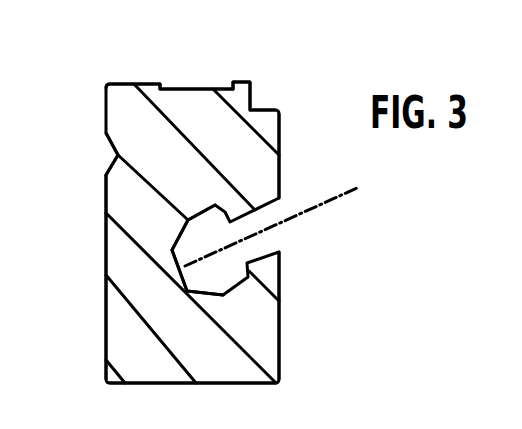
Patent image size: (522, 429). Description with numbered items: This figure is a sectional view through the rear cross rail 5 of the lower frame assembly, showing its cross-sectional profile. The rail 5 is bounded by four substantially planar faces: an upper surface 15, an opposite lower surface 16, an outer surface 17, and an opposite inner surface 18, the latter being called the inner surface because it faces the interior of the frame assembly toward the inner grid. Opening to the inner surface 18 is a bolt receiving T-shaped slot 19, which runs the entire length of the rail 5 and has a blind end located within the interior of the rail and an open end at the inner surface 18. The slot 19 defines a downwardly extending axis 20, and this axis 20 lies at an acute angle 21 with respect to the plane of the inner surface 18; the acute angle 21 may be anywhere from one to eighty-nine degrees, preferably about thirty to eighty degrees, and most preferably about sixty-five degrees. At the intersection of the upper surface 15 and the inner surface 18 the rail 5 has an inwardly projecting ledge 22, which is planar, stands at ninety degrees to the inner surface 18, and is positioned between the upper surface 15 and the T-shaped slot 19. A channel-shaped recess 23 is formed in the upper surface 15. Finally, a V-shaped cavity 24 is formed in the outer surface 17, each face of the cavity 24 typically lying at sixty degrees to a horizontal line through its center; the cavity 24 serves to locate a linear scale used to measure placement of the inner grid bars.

The rear cross rail 5 is at (87, 217).
The upper surface 15 is at (134, 84).
The lower surface 16 is at (170, 383).
The outer surface 17 is at (106, 273).
The inner surface 18 is at (281, 321).
The bolt receiving T-shaped slot 19 is at (170, 262).
The axis 20 is at (300, 215).
The acute angle 21 is at (338, 190).
The inwardly projecting ledge 22 is at (260, 110).
The channel-shaped recess 23 is at (192, 88).
The V-shaped cavity 24 is at (106, 145).